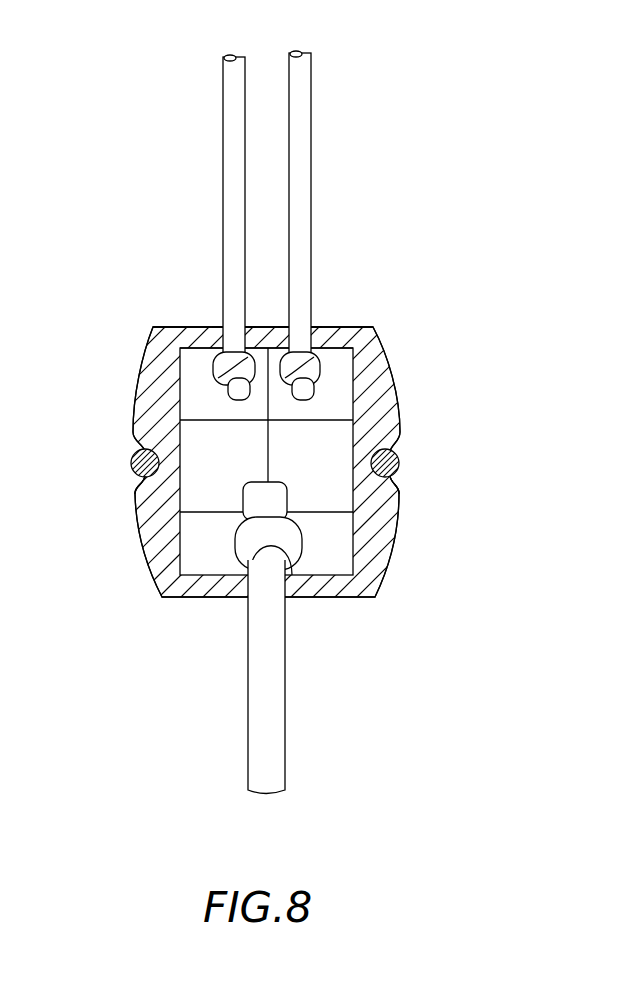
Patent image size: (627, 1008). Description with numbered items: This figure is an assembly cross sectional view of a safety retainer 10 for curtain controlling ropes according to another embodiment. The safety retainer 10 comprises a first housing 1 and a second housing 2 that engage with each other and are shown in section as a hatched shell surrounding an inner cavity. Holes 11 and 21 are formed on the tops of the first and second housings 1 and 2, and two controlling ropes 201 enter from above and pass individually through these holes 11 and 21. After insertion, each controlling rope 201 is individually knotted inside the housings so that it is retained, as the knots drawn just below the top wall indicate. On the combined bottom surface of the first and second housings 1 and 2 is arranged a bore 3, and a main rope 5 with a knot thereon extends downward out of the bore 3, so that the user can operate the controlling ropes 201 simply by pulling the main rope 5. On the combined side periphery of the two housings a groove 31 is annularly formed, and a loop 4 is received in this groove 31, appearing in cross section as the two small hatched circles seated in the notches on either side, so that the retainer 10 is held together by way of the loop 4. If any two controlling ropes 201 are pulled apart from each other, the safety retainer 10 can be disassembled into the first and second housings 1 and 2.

The safety retainer 10 is at (119, 553).
The first housing 1 is at (163, 345).
The second housing 2 is at (380, 358).
The hole 11 is at (217, 333).
The hole 21 is at (328, 333).
The controlling rope 201 is at (235, 137).
The loop 4 is at (404, 452).
The groove 31 is at (390, 487).
The bore 3 is at (290, 578).
The main rope 5 is at (273, 723).